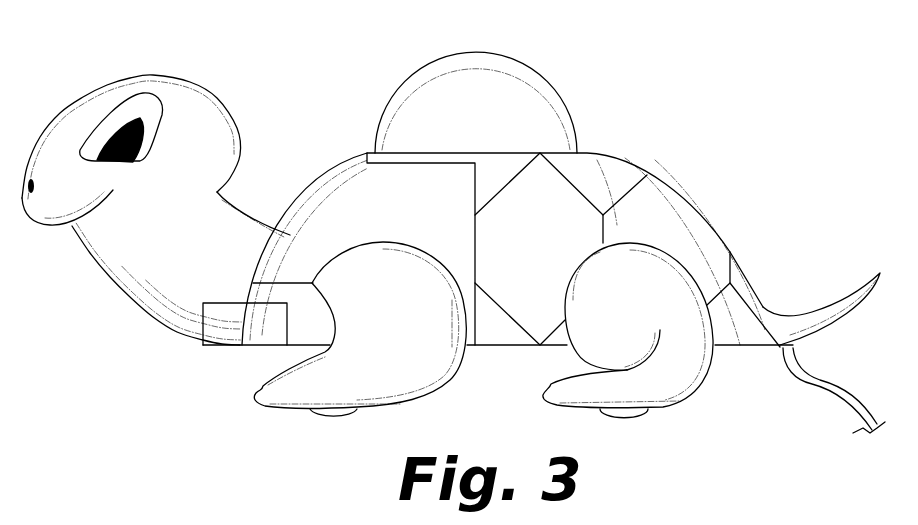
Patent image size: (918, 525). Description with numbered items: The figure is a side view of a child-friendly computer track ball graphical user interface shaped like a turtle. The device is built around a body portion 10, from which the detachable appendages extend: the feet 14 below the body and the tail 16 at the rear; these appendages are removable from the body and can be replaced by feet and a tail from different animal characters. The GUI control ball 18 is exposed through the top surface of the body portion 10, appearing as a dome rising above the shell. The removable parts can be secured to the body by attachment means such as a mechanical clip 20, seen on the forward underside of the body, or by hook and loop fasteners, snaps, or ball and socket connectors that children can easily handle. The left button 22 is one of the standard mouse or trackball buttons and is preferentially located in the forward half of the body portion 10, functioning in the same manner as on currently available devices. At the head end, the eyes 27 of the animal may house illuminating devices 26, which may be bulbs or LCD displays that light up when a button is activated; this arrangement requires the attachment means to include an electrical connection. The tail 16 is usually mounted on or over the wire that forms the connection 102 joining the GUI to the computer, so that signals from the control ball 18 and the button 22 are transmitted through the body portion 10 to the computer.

The body portion 10 is at (617, 180).
The feet 14 is at (662, 377).
The tail 16 is at (840, 302).
The GUI control ball 18 is at (532, 117).
The mechanical clip 20 is at (223, 325).
The left button 22 is at (345, 197).
The illuminating device 26 is at (121, 123).
The eyes 27 is at (146, 93).
The connection 102 is at (808, 387).